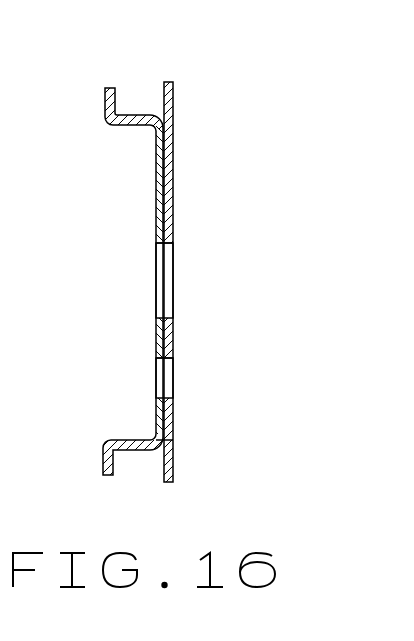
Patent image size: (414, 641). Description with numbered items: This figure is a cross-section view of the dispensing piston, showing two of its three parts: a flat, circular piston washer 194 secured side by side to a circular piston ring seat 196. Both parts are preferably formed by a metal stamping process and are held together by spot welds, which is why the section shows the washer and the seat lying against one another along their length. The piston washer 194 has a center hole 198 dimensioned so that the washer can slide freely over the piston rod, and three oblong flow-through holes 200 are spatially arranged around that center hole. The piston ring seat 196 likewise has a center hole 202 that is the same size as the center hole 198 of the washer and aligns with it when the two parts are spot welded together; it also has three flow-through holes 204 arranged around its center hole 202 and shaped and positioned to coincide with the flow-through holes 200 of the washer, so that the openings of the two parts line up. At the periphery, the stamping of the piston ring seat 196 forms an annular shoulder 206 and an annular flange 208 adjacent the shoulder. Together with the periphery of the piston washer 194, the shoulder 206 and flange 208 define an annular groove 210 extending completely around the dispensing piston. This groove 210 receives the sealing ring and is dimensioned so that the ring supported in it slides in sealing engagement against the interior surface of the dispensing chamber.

The piston washer 194 is at (173, 143).
The piston ring seat 196 is at (156, 207).
The center hole 198 is at (173, 259).
The flow-through holes 200 is at (173, 370).
The center hole 202 is at (160, 317).
The flow-through holes 204 is at (156, 402).
The annular shoulder 206 is at (134, 126).
The annular flange 208 is at (104, 106).
The annular groove 210 is at (135, 88).